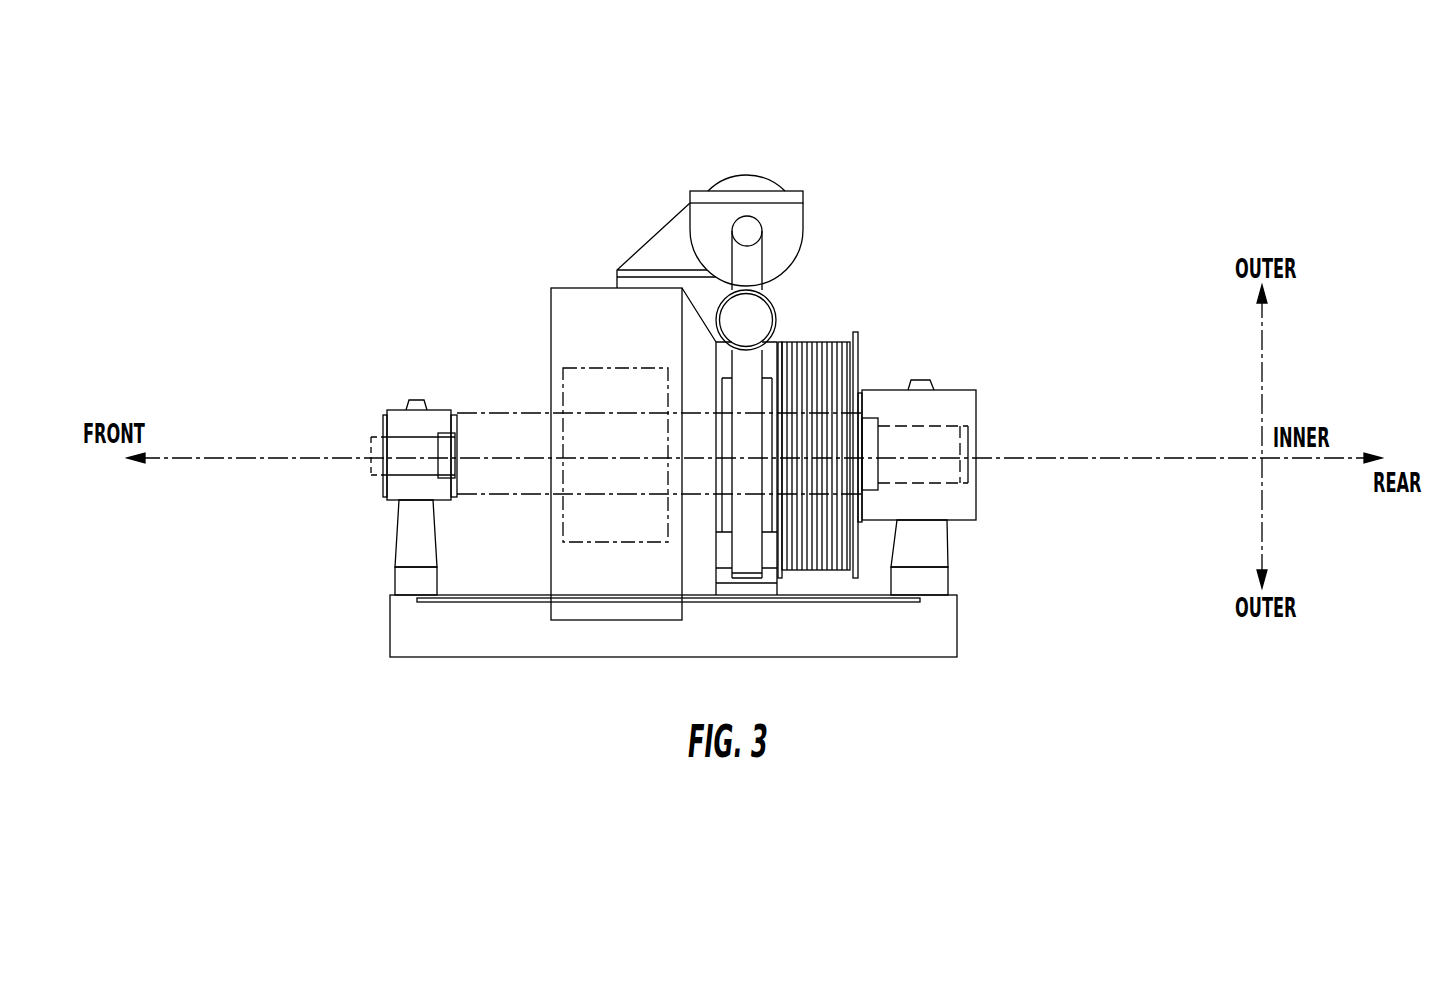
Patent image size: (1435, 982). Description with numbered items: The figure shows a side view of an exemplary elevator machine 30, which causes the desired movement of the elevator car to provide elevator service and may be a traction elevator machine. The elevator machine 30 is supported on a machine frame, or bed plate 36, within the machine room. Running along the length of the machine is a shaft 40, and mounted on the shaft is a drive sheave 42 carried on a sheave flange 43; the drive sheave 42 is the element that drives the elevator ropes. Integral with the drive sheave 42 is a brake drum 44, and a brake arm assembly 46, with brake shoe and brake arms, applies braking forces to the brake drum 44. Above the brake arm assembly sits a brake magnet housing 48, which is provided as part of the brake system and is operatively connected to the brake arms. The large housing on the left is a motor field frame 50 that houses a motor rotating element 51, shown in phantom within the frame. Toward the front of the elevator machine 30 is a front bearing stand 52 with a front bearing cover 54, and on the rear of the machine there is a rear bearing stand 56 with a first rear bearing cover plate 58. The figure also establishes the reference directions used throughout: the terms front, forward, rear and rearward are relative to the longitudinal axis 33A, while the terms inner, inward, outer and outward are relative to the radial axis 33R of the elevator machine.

The elevator machine 30 is at (443, 160).
The longitudinal axis 33A is at (160, 458).
The radial axis 33R is at (1262, 507).
The bed plate 36 is at (418, 656).
The shaft 40 is at (495, 495).
The drive sheave 42 is at (835, 342).
The sheave flange 43 is at (845, 402).
The brake drum 44 is at (770, 367).
The brake arm assembly 46 is at (733, 365).
The brake magnet housing 48 is at (703, 190).
The motor field frame 50 is at (550, 303).
The motor rotating element 51 is at (575, 397).
The front bearing stand 52 is at (382, 419).
The front bearing cover 54 is at (393, 487).
The rear bearing stand 56 is at (978, 493).
The first rear bearing cover plate 58 is at (967, 510).